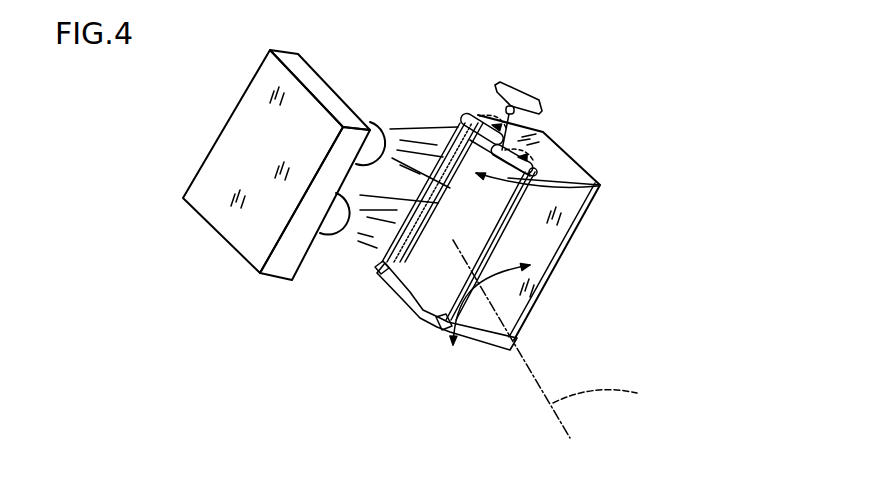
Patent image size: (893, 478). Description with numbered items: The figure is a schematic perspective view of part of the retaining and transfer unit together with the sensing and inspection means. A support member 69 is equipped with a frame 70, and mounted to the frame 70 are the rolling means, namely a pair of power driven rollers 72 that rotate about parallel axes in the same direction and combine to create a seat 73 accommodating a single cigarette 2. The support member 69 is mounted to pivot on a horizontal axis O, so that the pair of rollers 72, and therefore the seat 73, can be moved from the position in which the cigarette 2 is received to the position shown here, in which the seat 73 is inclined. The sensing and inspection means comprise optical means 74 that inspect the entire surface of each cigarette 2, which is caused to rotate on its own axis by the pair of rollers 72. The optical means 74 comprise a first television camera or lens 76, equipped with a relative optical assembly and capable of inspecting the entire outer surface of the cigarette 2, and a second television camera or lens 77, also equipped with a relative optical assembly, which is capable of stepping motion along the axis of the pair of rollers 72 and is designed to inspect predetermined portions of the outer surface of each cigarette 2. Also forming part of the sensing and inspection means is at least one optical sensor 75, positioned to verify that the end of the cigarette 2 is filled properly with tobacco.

The cigarette 2 is at (532, 226).
The support member 69 is at (523, 338).
The frame 70 is at (560, 275).
The power driven rollers 72 is at (397, 266).
The seat 73 is at (410, 295).
The optical means 74 is at (320, 245).
The optical sensor 75 is at (495, 98).
The first television camera or lens 76 is at (371, 122).
The second television camera or lens 77 is at (336, 215).